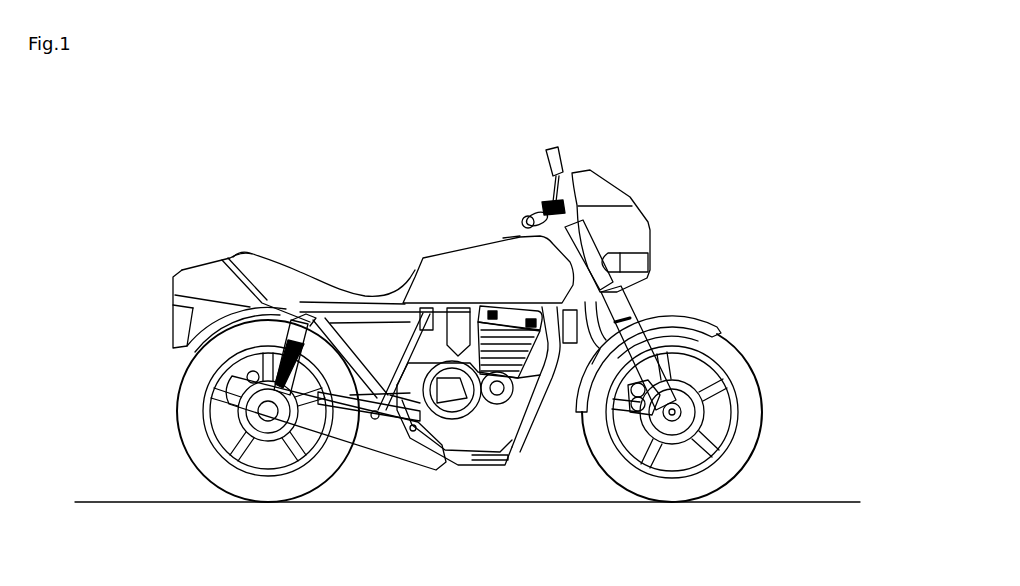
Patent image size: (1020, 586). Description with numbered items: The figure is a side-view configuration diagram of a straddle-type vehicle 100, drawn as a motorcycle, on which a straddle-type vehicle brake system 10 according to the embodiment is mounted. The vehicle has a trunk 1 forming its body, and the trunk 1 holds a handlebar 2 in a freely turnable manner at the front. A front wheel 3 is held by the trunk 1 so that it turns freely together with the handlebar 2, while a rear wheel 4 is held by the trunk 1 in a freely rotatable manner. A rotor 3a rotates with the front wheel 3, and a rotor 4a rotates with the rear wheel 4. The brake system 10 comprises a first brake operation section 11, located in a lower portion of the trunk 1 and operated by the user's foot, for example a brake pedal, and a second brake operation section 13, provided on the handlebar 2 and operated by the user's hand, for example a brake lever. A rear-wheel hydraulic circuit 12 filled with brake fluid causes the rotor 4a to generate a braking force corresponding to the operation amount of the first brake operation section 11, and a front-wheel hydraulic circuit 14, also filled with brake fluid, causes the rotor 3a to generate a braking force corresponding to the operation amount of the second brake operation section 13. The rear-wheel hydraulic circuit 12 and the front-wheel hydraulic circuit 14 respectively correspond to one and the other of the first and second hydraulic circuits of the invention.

The straddle-type vehicle 100 is at (740, 115).
The straddle-type vehicle brake system 10 is at (358, 195).
The trunk 1 is at (477, 270).
The handlebar 2 is at (527, 217).
The front wheel 3 is at (760, 349).
The rotor 3a is at (710, 432).
The rear wheel 4 is at (164, 388).
The rotor 4a is at (246, 440).
The first brake operation section 11 is at (414, 430).
The rear-wheel hydraulic circuit 12 is at (356, 460).
The second brake operation section 13 is at (580, 220).
The front-wheel hydraulic circuit 14 is at (652, 292).